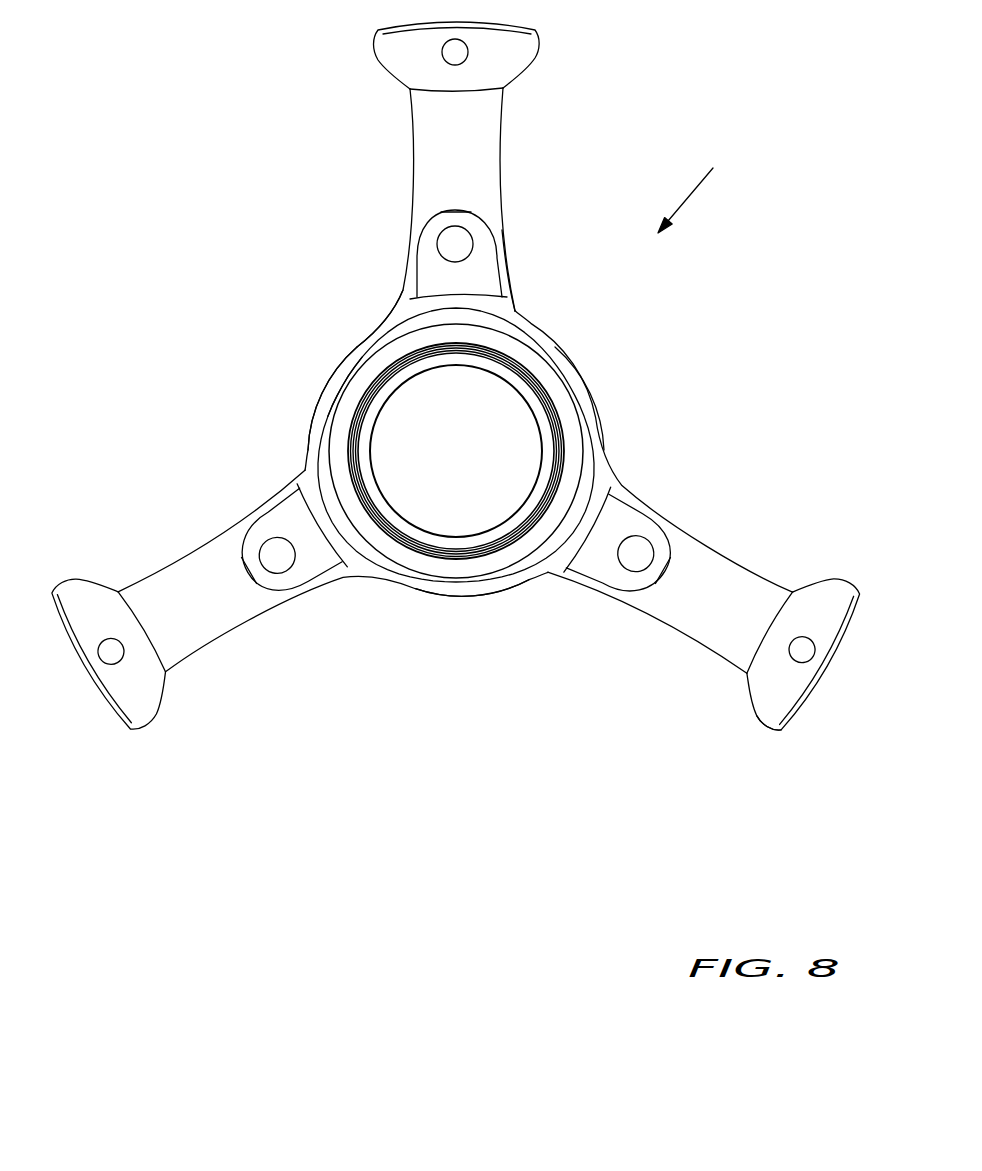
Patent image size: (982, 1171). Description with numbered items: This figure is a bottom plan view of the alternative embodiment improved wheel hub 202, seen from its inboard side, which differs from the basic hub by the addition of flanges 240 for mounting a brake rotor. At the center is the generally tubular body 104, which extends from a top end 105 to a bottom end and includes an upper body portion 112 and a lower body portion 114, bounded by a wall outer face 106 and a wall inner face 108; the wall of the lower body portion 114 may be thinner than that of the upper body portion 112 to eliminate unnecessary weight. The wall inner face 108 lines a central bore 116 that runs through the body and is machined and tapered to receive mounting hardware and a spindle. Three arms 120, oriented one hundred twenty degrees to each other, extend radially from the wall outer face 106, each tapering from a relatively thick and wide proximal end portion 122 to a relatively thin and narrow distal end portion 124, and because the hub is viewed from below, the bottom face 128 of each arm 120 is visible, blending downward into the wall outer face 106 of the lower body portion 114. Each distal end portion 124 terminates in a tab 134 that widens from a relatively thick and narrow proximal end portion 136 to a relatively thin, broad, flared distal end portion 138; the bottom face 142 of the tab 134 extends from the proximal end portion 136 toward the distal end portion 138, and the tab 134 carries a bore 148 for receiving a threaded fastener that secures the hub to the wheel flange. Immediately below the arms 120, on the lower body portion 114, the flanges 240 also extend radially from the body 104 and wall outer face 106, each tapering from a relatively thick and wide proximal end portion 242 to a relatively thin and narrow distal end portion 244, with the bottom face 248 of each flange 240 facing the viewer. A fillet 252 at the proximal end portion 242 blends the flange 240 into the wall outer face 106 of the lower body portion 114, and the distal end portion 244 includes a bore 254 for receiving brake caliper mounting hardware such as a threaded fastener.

The body 104 is at (551, 347).
The top end 105 is at (556, 404).
The wall outer face 106 is at (608, 448).
The wall inner face 108 is at (396, 390).
The upper body portion 112 is at (346, 353).
The lower body portion 114 is at (346, 389).
The central bore 116 is at (336, 421).
The arms 120 is at (474, 409).
The proximal end portion 122 is at (362, 576).
The distal end portion 124 is at (168, 675).
The bottom face 128 is at (481, 166).
The tab 134 is at (398, 72).
The proximal end portion 136 is at (744, 679).
The distal end portion 138 is at (773, 731).
The bottom face 142 is at (805, 692).
The bore 148 is at (806, 645).
The improved wheel hub 202 is at (712, 185).
The flanges 240 is at (484, 232).
The proximal end portion 242 is at (523, 323).
The distal end portion 244 is at (455, 207).
The bottom face 248 is at (495, 291).
The fillet 252 is at (404, 296).
The bore 254 is at (471, 256).